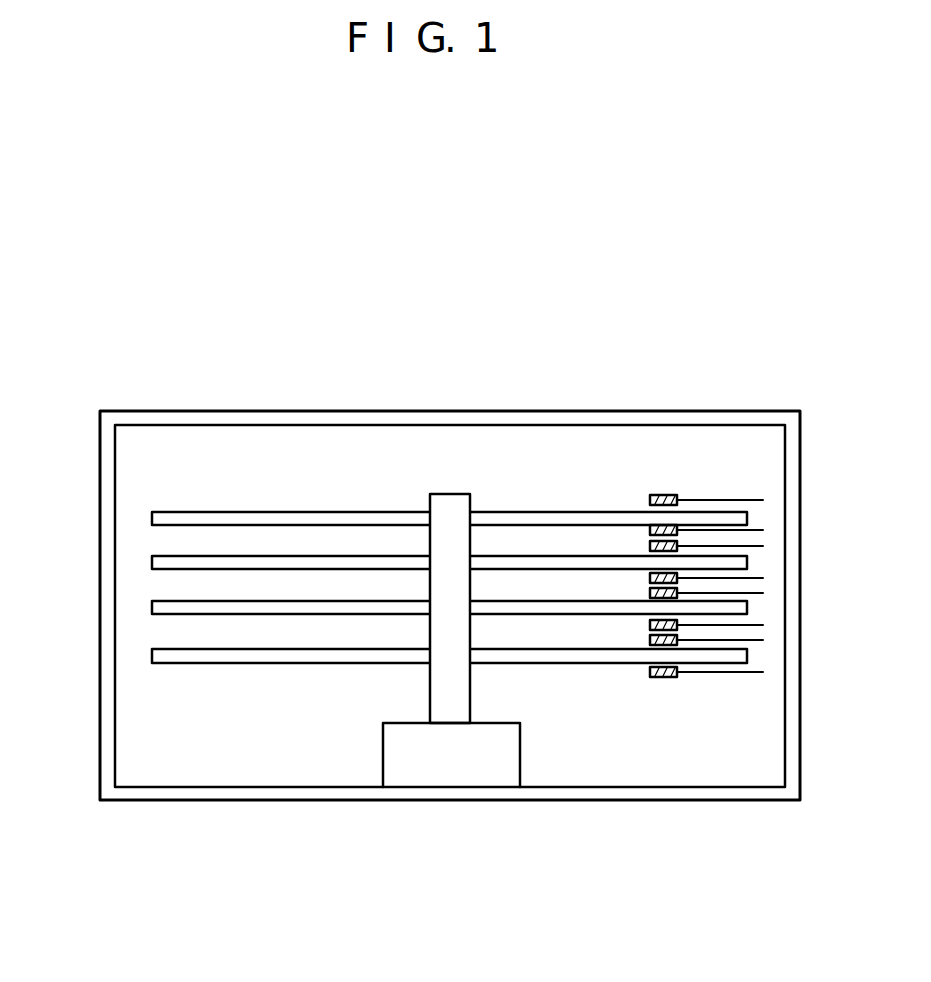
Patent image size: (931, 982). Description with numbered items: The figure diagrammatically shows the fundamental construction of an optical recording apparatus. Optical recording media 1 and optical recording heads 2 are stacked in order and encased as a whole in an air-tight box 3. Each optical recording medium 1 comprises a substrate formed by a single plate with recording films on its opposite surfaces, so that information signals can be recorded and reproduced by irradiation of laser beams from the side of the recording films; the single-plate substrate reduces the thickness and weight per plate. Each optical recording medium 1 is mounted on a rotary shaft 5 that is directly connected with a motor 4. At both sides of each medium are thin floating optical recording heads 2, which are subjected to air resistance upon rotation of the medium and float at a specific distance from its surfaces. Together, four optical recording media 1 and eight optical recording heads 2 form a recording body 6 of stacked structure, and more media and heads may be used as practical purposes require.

The optical recording medium 1 is at (350, 513).
The optical recording head 2 is at (670, 495).
The air-tight box 3 is at (176, 411).
The motor 4 is at (493, 775).
The rotary shaft 5 is at (445, 693).
The recording body 6 is at (625, 655).